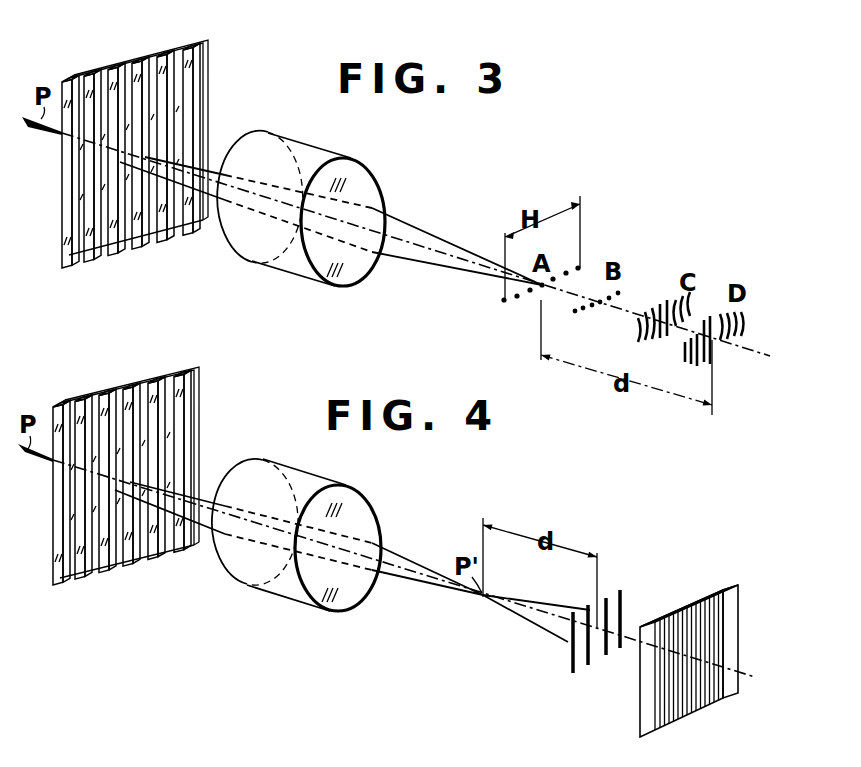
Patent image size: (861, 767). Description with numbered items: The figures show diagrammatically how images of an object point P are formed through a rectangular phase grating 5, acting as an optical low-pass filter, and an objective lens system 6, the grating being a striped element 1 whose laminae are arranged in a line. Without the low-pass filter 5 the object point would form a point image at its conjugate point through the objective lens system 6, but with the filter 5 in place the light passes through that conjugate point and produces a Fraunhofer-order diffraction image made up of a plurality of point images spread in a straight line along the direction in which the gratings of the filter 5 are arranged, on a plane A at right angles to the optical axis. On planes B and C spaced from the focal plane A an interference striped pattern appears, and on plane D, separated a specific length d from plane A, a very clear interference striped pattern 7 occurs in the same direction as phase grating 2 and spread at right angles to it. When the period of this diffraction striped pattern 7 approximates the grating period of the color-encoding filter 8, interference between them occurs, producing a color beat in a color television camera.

In FIG. 3, the grating bars 1 is at (100, 74).
In FIG. 4, the grating bars 1 is at (96, 400).
In FIG. 3, the phase grating 2 is at (200, 80).
In FIG. 4, the phase grating 2 is at (190, 400).
In FIG. 3, the rectangular phase grating 5 is at (127, 60).
In FIG. 4, the rectangular phase grating 5 is at (120, 386).
In FIG. 3, the objective lens system 6 is at (320, 158).
In FIG. 4, the objective lens system 6 is at (314, 487).
In FIG. 3, the interference striped pattern 7 is at (712, 335).
In FIG. 4, the interference striped pattern 7 is at (612, 603).
In FIG. 4, the color-encoding filter 8 is at (700, 598).